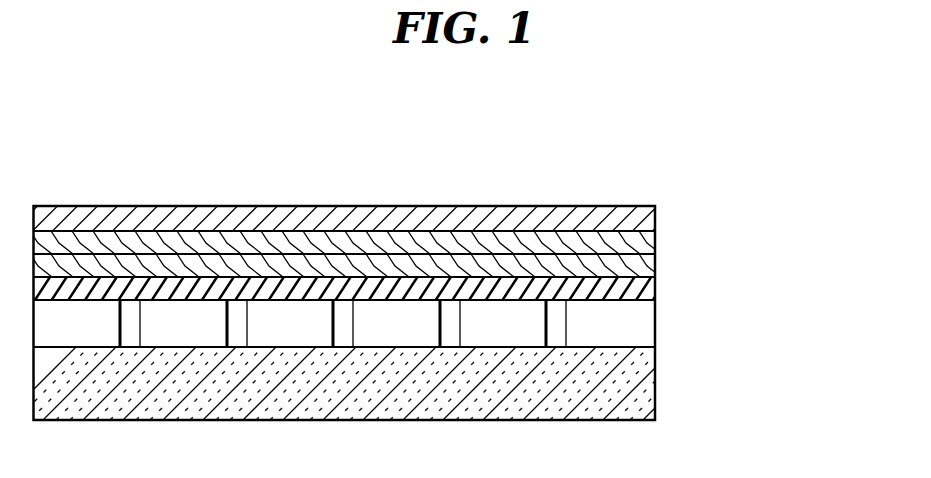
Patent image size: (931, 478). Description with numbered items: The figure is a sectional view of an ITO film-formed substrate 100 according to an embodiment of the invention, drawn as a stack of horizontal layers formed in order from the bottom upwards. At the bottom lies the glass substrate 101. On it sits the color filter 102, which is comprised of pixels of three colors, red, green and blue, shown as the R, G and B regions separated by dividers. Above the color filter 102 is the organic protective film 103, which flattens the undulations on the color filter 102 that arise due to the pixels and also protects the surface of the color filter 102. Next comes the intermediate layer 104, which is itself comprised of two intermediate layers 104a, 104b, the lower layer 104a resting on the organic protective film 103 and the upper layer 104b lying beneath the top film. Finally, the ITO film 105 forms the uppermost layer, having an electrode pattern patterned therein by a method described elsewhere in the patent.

The ITO film-formed substrate 100 is at (450, 304).
The glass substrate 101 is at (647, 380).
The color filter 102 is at (647, 323).
The organic protective film 103 is at (648, 288).
The intermediate layer 104 is at (419, 253).
The intermediate layer 104a is at (648, 262).
The intermediate layer 104b is at (648, 242).
The ITO film 105 is at (647, 221).